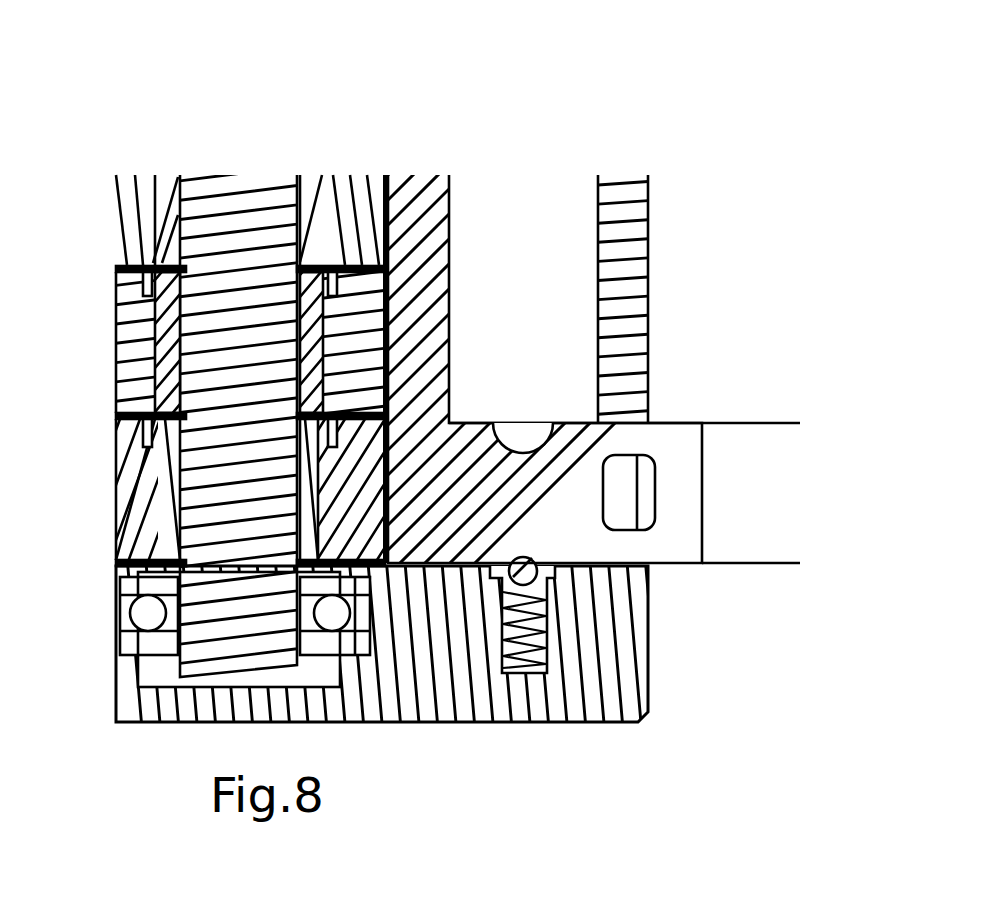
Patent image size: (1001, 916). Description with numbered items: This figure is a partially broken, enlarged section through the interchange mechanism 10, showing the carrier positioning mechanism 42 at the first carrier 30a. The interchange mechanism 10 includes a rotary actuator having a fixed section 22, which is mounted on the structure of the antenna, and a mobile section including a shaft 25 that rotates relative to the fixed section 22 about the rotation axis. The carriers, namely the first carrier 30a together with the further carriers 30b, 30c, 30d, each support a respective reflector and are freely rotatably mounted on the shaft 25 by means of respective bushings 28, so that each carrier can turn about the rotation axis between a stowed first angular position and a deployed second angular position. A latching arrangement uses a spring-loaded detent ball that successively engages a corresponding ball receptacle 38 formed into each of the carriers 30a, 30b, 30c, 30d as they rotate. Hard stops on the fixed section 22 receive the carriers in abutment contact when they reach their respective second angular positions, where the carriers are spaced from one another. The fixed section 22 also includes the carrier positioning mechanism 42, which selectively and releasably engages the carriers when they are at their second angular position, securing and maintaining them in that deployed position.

The interchange mechanism 10 is at (611, 101).
The fixed section 22 is at (648, 252).
The shaft 25 is at (252, 200).
The bushings 28 is at (143, 332).
The first carrier 30a is at (452, 243).
The carrier 30b is at (341, 200).
The carrier 30c is at (362, 333).
The carrier 30d is at (135, 510).
The ball receptacle 38 is at (553, 430).
The carrier positioning mechanism 42 is at (548, 633).